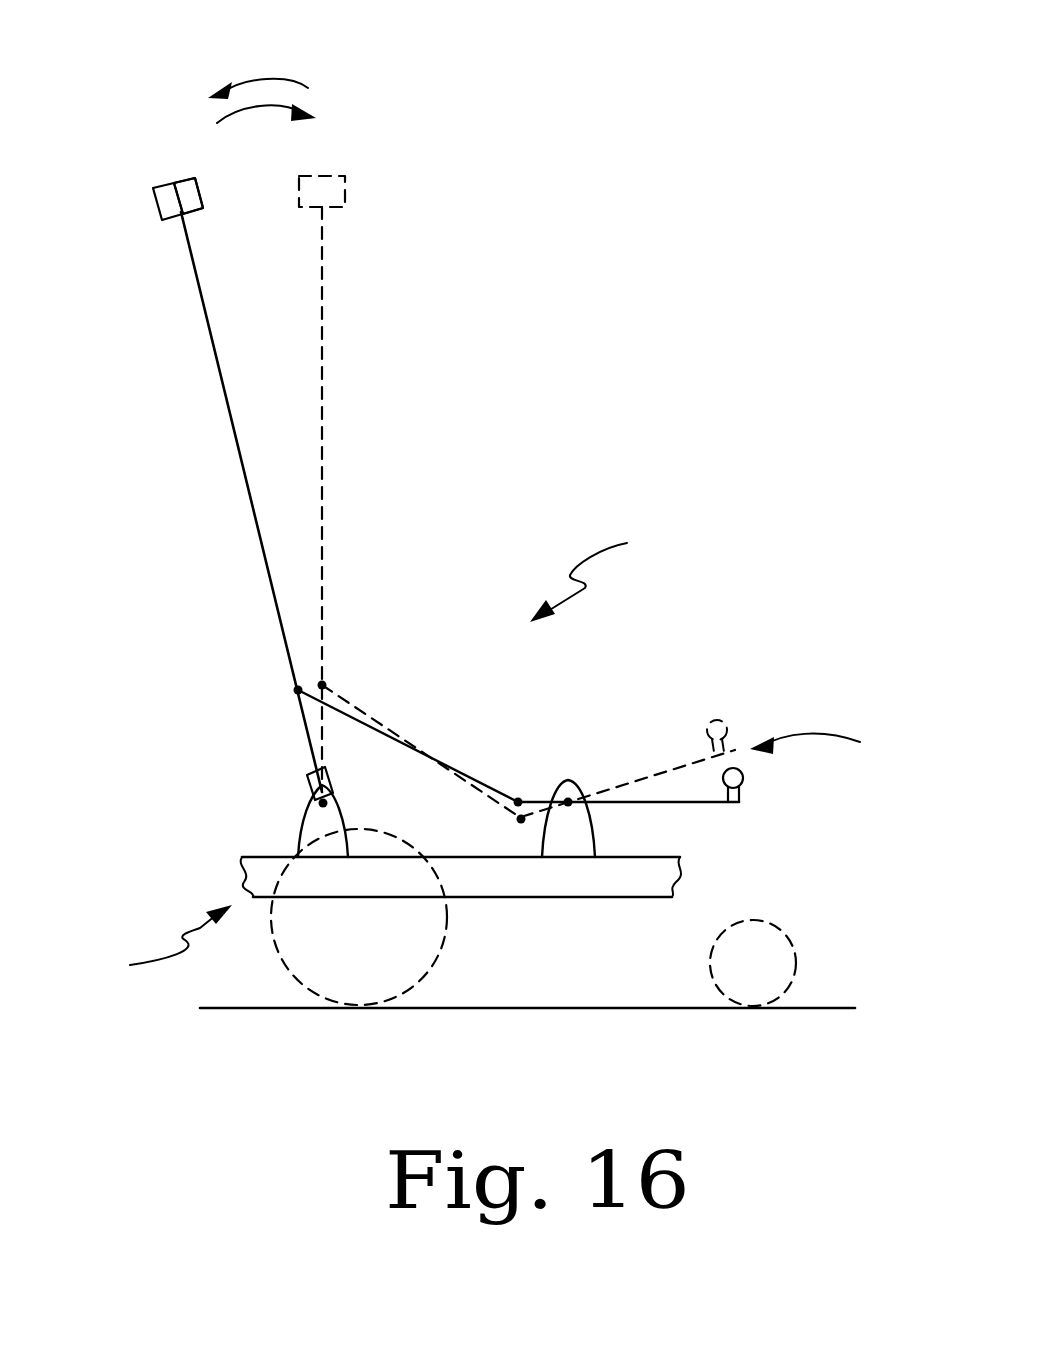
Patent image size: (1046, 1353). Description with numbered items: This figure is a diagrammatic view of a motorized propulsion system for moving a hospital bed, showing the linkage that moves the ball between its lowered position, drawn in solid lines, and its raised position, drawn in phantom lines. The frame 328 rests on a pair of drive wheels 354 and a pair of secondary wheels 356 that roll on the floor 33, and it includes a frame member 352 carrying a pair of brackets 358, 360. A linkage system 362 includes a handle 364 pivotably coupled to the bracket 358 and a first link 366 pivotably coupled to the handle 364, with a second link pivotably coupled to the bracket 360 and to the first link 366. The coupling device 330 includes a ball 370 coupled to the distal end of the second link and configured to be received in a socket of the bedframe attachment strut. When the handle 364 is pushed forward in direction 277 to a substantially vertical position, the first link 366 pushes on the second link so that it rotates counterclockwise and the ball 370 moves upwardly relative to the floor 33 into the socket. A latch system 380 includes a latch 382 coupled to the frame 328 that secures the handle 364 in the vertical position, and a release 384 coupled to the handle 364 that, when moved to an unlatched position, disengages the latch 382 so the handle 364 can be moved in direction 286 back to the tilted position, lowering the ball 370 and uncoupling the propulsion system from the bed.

The latch system 380 is at (138, 180).
The direction 286 is at (276, 80).
The direction 277 is at (260, 108).
The release 384 is at (168, 212).
The handle 364 is at (212, 352).
The first link 366 is at (345, 706).
The ball 370 is at (716, 720).
The linkage system 362 is at (609, 571).
The coupling device 330 is at (835, 746).
The latch 382 is at (307, 775).
The bracket 358 is at (333, 817).
The bracket 360 is at (583, 827).
The frame member 352 is at (677, 878).
The drive wheels 354 is at (448, 937).
The secondary wheels 356 is at (797, 950).
The floor 33 is at (573, 1005).
The frame 328 is at (151, 947).